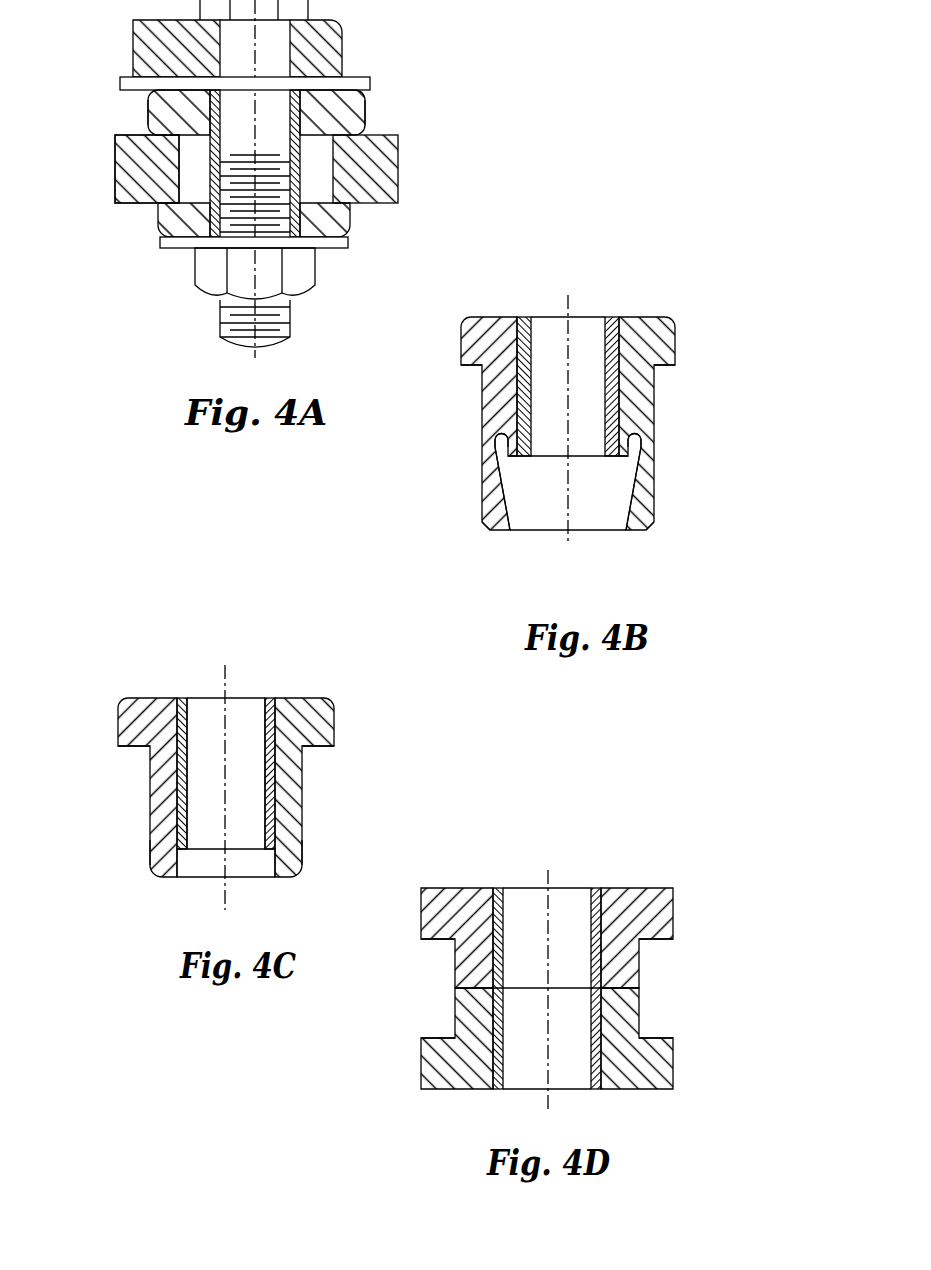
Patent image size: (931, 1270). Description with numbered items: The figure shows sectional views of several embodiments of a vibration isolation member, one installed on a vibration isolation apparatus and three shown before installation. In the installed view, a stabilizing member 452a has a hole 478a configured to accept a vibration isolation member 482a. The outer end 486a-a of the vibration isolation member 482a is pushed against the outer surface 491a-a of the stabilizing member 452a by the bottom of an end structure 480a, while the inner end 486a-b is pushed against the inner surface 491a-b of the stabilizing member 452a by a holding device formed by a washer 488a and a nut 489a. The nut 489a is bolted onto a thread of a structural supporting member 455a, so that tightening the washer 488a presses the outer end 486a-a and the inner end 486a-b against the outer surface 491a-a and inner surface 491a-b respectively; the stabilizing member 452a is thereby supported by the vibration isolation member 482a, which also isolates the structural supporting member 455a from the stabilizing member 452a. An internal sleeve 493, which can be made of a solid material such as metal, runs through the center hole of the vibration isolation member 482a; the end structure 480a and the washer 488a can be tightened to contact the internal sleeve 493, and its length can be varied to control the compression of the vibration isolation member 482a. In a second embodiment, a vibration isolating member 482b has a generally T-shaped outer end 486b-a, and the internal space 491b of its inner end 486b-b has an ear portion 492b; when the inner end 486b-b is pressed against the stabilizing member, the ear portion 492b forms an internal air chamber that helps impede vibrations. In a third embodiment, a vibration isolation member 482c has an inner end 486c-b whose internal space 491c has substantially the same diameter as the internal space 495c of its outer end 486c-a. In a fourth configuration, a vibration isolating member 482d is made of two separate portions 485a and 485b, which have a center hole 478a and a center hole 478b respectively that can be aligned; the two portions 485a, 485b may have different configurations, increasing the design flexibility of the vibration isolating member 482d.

In FIG. 4A, the end structure 480a is at (370, 82).
In FIG. 4A, the vibration isolation member 482a is at (365, 107).
In FIG. 4A, the outer end 486a-a is at (155, 118).
In FIG. 4A, the inner end 486a-b is at (165, 222).
In FIG. 4A, the outer surface 491a-a is at (135, 139).
In FIG. 4A, the inner surface 491a-b is at (131, 196).
In FIG. 4A, the stabilizing member 452a is at (390, 152).
In FIG. 4A, the hole 478a is at (337, 163).
In FIG. 4D, the hole 478a is at (565, 890).
In FIG. 4A, the internal sleeve 493 is at (213, 213).
In FIG. 4A, the washer 488a is at (350, 248).
In FIG. 4A, the nut 489a is at (310, 287).
In FIG. 4A, the structural supporting member 455a is at (218, 330).
In FIG. 4B, the vibration isolating member 482b is at (697, 395).
In FIG. 4B, the outer end 486b-a is at (672, 330).
In FIG. 4B, the inner end 486b-b is at (655, 503).
In FIG. 4B, the ear portion 492b is at (500, 443).
In FIG. 4B, the internal space 491b is at (545, 510).
In FIG. 4C, the vibration isolation member 482c is at (338, 792).
In FIG. 4C, the outer end 486c-a is at (330, 708).
In FIG. 4C, the inner end 486c-b is at (160, 858).
In FIG. 4C, the internal space 495c is at (244, 712).
In FIG. 4C, the internal space 491c is at (212, 836).
In FIG. 4D, the vibration isolating member 482d is at (688, 967).
In FIG. 4D, the first portion 485a is at (648, 910).
In FIG. 4D, the second portion 485b is at (650, 1065).
In FIG. 4D, the center hole 478b is at (565, 1082).